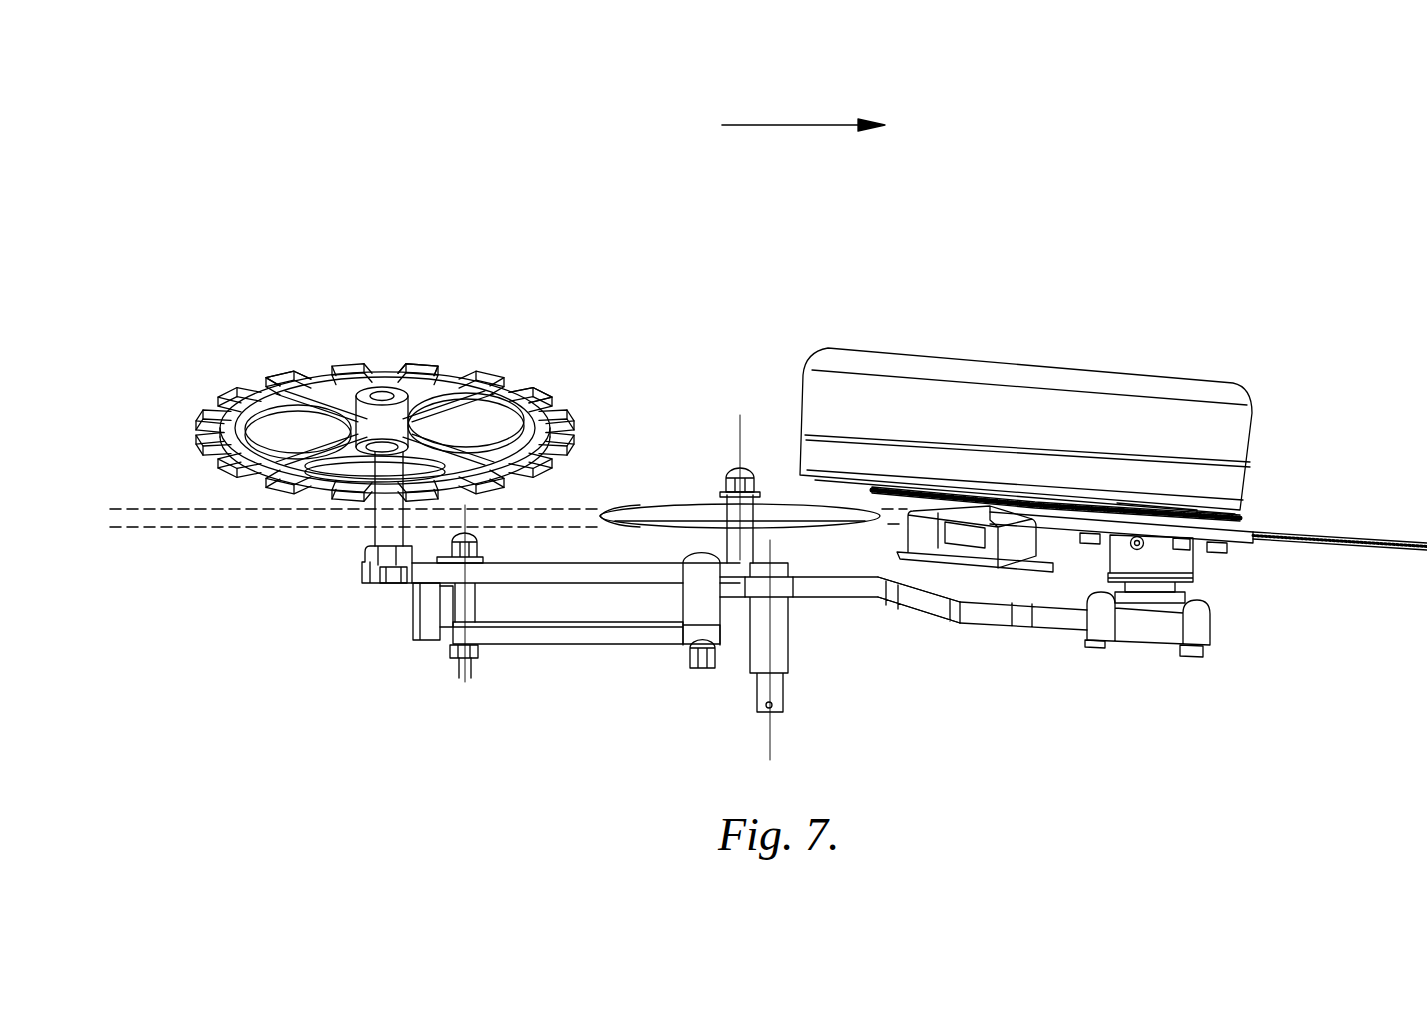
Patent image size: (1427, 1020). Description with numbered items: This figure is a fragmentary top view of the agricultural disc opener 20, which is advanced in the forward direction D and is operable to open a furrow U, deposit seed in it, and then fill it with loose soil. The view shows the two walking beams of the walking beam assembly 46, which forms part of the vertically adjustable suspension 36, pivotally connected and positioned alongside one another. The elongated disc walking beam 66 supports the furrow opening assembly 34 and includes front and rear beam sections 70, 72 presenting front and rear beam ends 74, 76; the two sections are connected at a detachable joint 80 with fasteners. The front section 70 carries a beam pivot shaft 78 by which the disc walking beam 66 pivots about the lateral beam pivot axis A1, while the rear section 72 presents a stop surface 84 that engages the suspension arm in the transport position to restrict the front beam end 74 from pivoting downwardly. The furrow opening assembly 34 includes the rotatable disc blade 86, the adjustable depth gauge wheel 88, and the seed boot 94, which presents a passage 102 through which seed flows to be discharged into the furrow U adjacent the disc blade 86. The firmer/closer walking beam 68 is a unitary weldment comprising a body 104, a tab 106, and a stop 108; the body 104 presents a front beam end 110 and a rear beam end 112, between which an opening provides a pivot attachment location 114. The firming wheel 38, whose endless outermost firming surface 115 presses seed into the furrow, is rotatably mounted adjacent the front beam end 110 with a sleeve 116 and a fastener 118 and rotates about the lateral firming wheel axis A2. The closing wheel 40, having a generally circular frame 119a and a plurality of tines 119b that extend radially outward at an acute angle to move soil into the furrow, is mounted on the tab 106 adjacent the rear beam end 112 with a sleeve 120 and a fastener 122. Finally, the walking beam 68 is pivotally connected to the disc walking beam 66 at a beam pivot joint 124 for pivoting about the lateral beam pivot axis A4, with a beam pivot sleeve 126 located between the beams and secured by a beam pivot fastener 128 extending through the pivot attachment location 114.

The agricultural disc opener 20 is at (1183, 236).
The furrow opening assembly 34 is at (1187, 563).
The vertically adjustable suspension 36 is at (920, 598).
The firming wheel 38 is at (660, 503).
The closing wheel 40 is at (457, 366).
The walking beam assembly 46 is at (1060, 620).
The disc walking beam 66 is at (1003, 620).
The firmer/closer walking beam 68 is at (585, 573).
The front beam section 70 is at (822, 586).
The rear beam section 72 is at (572, 637).
The front beam end 74 is at (1230, 630).
The rear beam end 76 is at (394, 701).
The beam pivot shaft 78 is at (762, 698).
The detachable joint 80 is at (690, 655).
The stop surface 84 is at (722, 633).
The rotatable disc blade 86 is at (1353, 530).
The adjustable depth gauge wheel 88 is at (1242, 423).
The seed boot 94 is at (1004, 548).
The passage 102 is at (960, 556).
The body 104 is at (527, 573).
The tab 106 is at (377, 557).
The stop 108 is at (428, 608).
The front beam end 110 is at (778, 555).
The rear beam end 112 is at (296, 580).
The pivot attachment location 114 is at (492, 635).
The firming surface 115 is at (623, 517).
The sleeve 116 is at (730, 550).
The fastener 118 is at (740, 478).
The circular frame 119a is at (523, 398).
The tines 119b is at (380, 361).
The sleeve 120 is at (385, 487).
The fastener 122 is at (387, 583).
The beam pivot joint 124 is at (437, 652).
The beam pivot sleeve 126 is at (453, 610).
The beam pivot fastener 128 is at (477, 652).
The lateral beam pivot axis A1 is at (770, 730).
The lateral firming wheel axis A2 is at (737, 428).
The lateral beam pivot axis A4 is at (468, 678).
The forward direction D is at (803, 141).
The furrow U is at (197, 527).